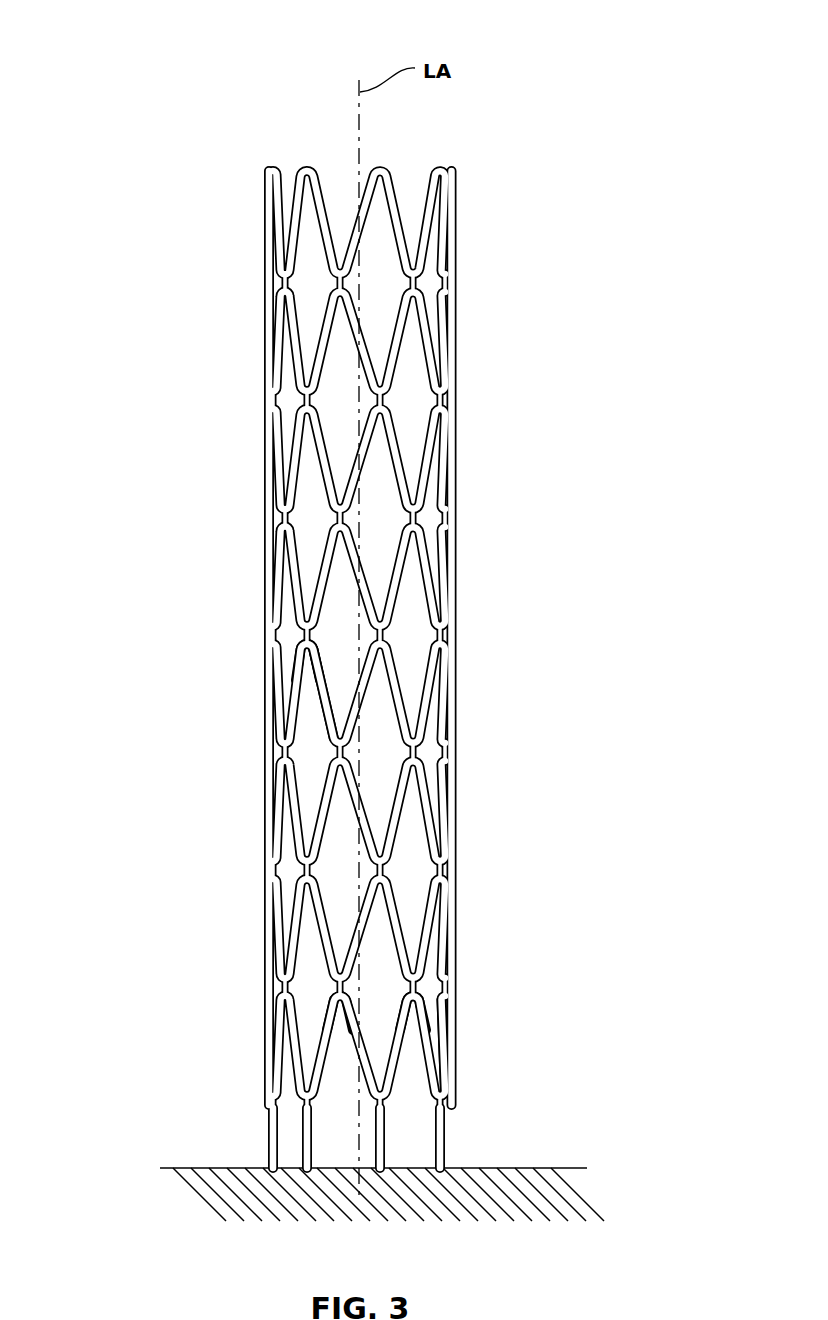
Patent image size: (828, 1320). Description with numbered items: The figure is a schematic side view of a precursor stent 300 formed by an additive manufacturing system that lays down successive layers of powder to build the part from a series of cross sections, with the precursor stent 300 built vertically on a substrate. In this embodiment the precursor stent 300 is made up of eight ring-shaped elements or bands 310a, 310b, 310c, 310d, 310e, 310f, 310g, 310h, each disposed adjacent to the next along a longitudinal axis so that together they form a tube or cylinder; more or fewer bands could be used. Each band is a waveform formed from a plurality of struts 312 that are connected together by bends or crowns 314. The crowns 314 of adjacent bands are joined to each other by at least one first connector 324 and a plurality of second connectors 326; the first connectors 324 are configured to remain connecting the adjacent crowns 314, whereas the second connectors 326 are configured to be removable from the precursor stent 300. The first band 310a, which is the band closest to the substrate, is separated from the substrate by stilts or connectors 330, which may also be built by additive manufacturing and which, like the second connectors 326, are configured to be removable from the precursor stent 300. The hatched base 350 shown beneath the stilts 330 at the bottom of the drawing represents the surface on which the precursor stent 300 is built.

The precursor stent 300 is at (266, 555).
The first band 310a is at (288, 1054).
The band 310b is at (288, 928).
The band 310c is at (282, 811).
The band 310d is at (434, 693).
The band 310e is at (434, 580).
The band 310f is at (433, 459).
The band 310g is at (435, 344).
The band 310h is at (435, 218).
The strut 312 is at (375, 870).
The crown 314 is at (376, 840).
The first connector 324 is at (371, 691).
The second connector 326 is at (367, 691).
The stilt 330 is at (431, 1119).
The base 350 is at (563, 1168).